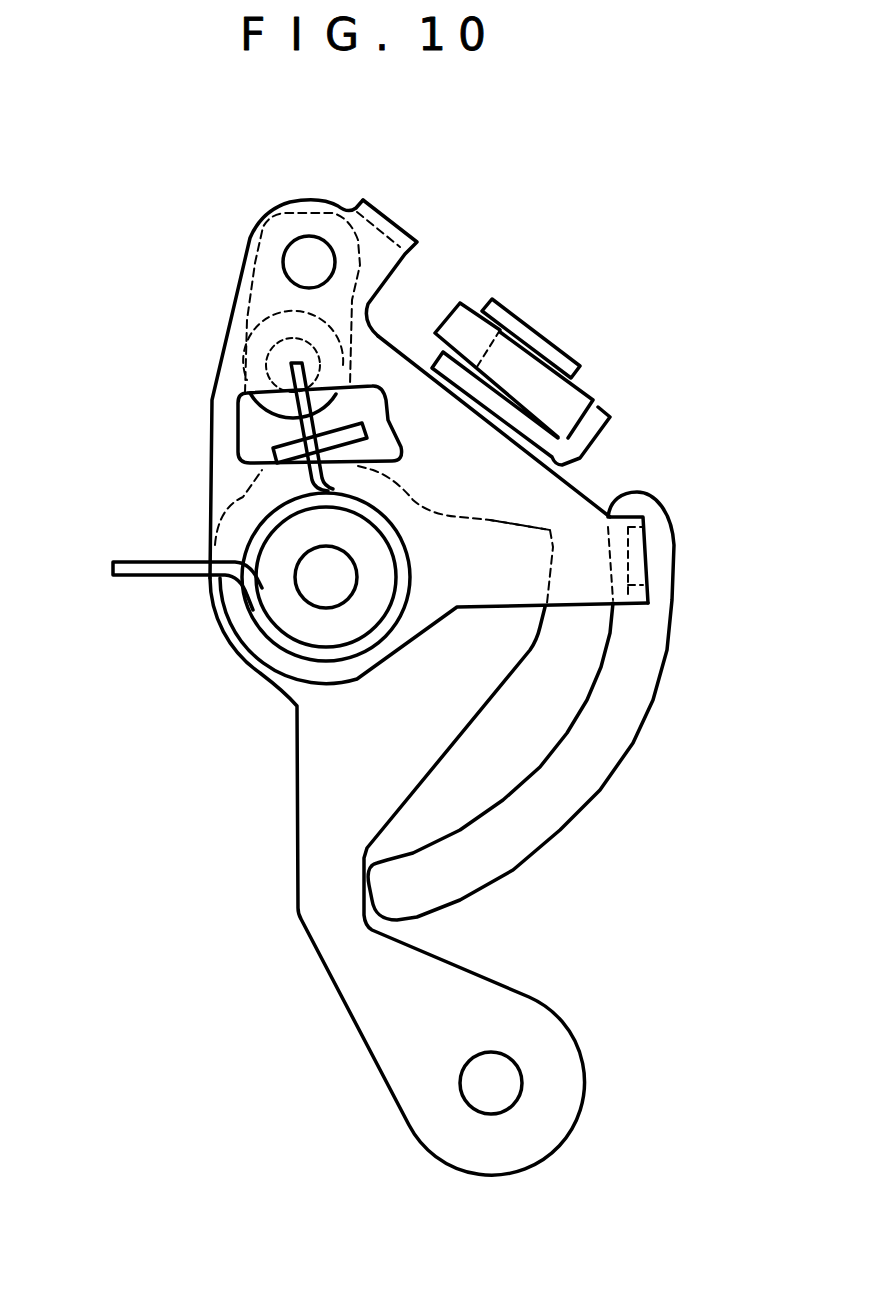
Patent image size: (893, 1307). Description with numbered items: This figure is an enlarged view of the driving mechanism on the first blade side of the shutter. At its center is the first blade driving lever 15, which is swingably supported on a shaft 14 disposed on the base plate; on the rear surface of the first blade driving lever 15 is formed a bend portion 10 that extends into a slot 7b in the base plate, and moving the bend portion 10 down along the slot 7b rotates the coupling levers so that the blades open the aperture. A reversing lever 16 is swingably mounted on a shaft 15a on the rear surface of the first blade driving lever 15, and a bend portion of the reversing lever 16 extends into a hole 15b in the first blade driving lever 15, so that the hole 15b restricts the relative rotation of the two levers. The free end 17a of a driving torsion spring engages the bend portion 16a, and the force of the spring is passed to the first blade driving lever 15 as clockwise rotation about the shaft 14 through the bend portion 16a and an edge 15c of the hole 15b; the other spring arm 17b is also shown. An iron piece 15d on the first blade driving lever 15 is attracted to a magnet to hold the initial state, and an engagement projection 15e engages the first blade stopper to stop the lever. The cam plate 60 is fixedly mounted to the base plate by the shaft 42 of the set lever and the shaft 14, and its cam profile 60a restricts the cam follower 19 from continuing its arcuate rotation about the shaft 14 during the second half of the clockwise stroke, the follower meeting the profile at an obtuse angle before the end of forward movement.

The slot 7b is at (653, 702).
The bend portion 10 is at (650, 563).
The shaft 14 is at (333, 610).
The first blade driving lever 15 is at (480, 607).
The shaft 15a is at (288, 238).
The hole 15b is at (240, 425).
The edge 15c is at (397, 460).
The iron piece 15d is at (458, 305).
The engagement projection 15e is at (398, 224).
The reversing lever 16 is at (252, 312).
The bend portion 16a is at (253, 457).
The free end 17a is at (150, 582).
The spring arm 17b is at (288, 363).
The cam follower 19 is at (322, 326).
The shaft 42 is at (510, 1057).
The cam plate 60 is at (297, 778).
The cam profile 60a is at (490, 520).